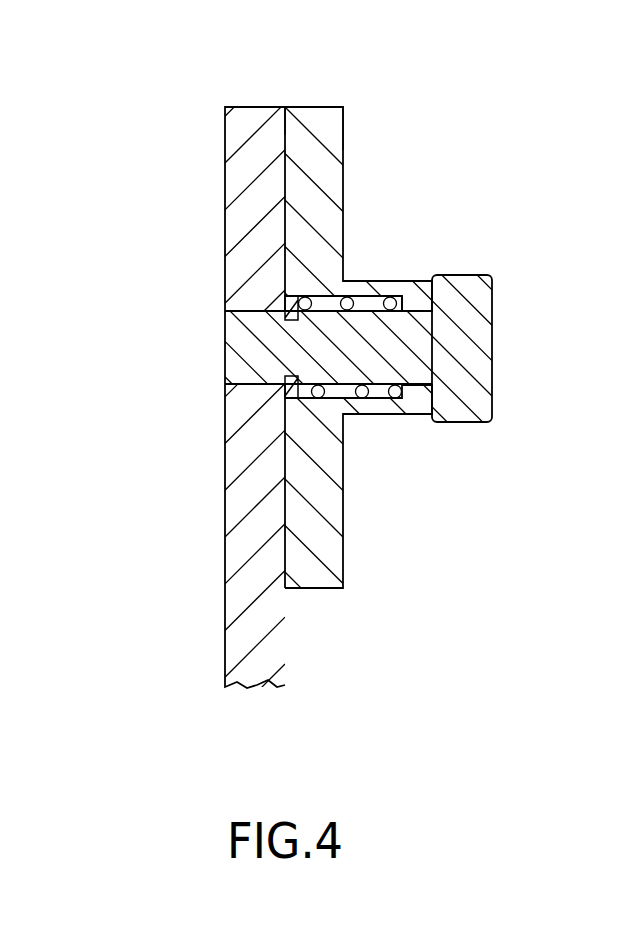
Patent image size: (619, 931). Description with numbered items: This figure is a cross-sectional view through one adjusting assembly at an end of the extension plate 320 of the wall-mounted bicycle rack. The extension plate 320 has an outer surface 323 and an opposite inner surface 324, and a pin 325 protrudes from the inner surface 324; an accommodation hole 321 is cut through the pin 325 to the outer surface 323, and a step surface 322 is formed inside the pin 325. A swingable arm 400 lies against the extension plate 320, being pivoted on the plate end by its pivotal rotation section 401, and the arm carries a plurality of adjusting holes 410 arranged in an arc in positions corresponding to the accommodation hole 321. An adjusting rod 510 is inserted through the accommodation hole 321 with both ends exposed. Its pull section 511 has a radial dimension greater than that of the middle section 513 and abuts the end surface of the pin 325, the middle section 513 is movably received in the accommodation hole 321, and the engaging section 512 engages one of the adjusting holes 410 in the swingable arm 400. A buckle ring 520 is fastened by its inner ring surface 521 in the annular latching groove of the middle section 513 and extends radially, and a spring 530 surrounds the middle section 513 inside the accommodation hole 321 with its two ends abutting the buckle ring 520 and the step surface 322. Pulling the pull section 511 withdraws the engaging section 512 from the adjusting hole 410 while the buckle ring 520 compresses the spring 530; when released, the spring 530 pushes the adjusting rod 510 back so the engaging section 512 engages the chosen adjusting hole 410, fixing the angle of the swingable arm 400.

The swingable arm 400 is at (219, 611).
The pivotal rotation section 401 is at (228, 123).
The adjusting hole 410 is at (225, 327).
The extension plate 320 is at (349, 567).
The accommodation hole 321 is at (346, 296).
The step surface 322 is at (395, 296).
The outer surface 323 is at (285, 125).
The inner surface 324 is at (344, 137).
The pin 325 is at (397, 416).
The adjusting rod 510 is at (497, 350).
The pull section 511 is at (462, 275).
The engaging section 512 is at (249, 323).
The middle section 513 is at (376, 398).
The buckle ring 520 is at (280, 380).
The inner ring surface 521 is at (283, 377).
The spring 530 is at (363, 398).